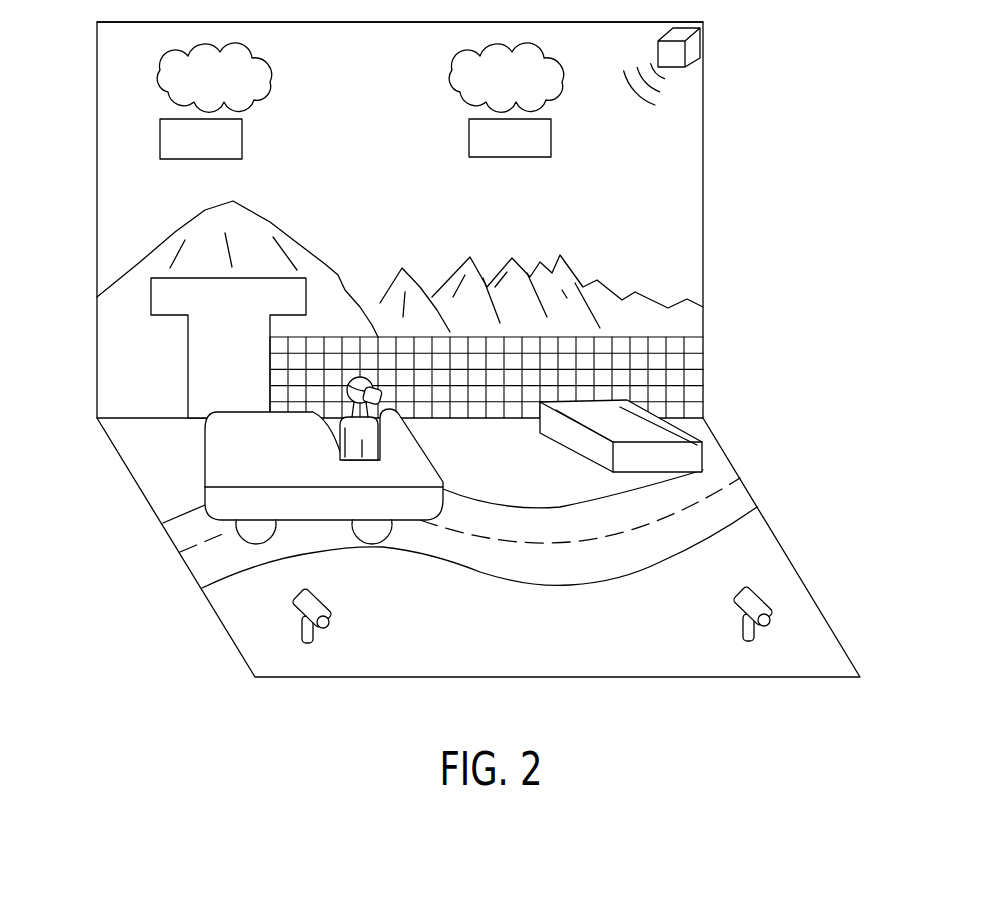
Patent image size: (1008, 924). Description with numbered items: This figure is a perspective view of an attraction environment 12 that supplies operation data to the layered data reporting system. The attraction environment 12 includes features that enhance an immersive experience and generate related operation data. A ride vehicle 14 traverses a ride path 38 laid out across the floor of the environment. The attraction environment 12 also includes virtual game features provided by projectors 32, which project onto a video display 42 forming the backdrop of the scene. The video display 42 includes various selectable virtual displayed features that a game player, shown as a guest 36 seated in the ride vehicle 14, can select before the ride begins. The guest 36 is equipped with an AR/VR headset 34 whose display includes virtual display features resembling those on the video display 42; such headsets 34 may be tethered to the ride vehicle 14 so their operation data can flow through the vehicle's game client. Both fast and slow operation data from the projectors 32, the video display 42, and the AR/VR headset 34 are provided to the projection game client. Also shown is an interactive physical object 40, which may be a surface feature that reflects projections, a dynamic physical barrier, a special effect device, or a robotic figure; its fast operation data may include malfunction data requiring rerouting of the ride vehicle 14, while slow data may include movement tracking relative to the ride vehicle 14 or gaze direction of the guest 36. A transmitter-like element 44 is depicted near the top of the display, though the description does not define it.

The attraction environment 12 is at (97, 190).
The ride vehicle 14 is at (218, 442).
The projector 32 is at (327, 612).
The AR/VR headset 34 is at (347, 403).
The guest 36 is at (363, 447).
The ride path 38 is at (728, 532).
The interactive physical object 40 is at (693, 458).
The video display 42 is at (677, 160).
The transmitter / wireless controller 44 is at (692, 48).